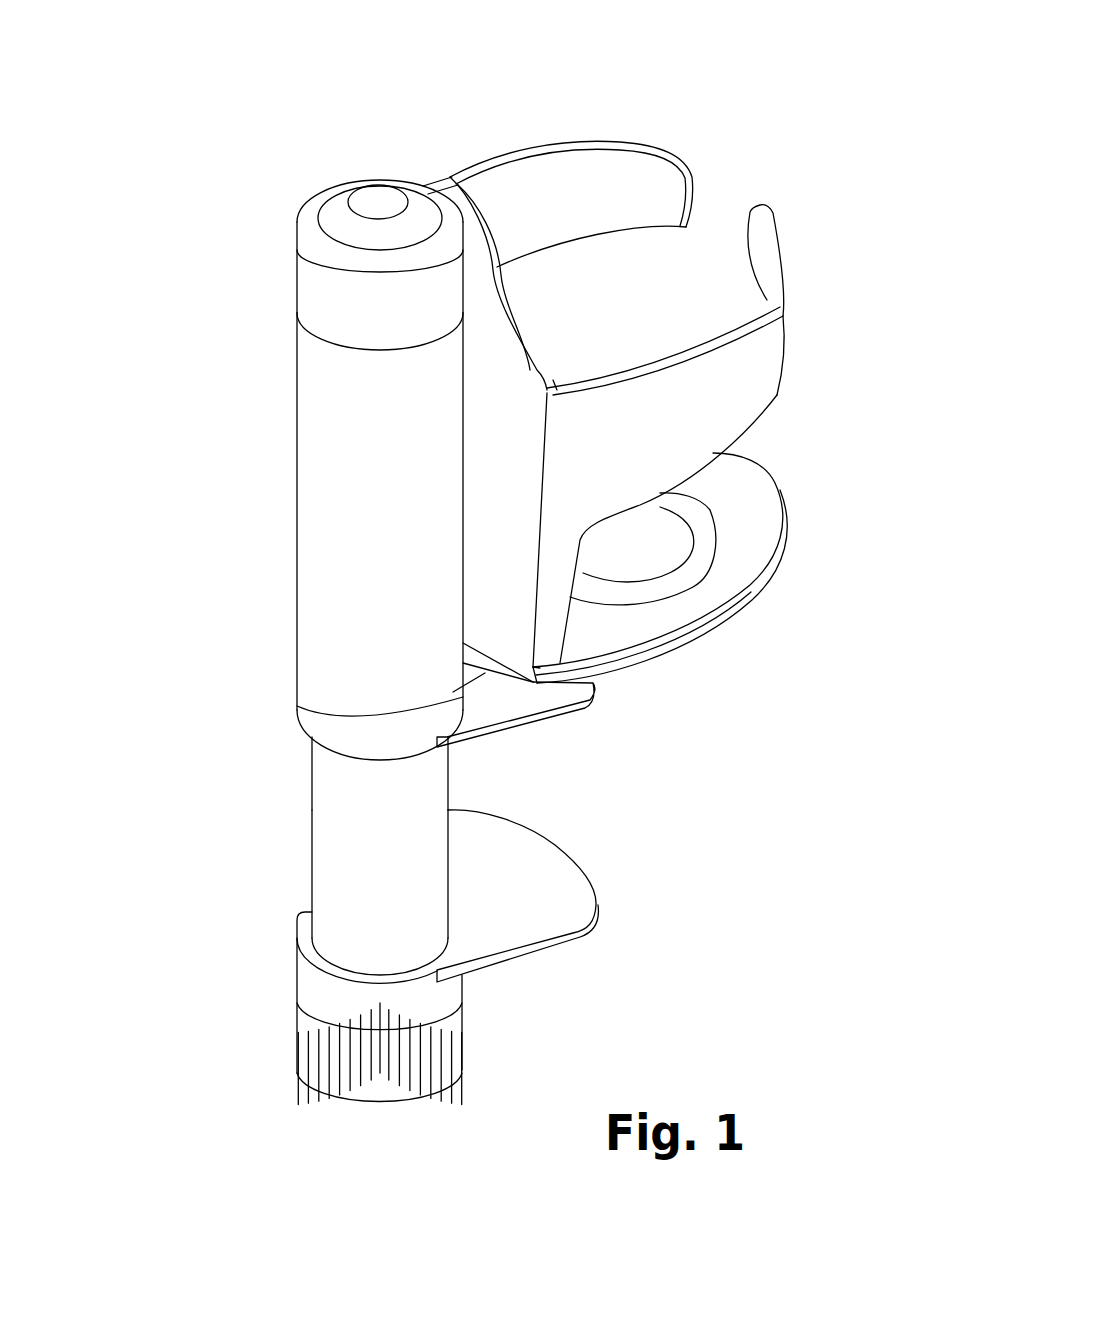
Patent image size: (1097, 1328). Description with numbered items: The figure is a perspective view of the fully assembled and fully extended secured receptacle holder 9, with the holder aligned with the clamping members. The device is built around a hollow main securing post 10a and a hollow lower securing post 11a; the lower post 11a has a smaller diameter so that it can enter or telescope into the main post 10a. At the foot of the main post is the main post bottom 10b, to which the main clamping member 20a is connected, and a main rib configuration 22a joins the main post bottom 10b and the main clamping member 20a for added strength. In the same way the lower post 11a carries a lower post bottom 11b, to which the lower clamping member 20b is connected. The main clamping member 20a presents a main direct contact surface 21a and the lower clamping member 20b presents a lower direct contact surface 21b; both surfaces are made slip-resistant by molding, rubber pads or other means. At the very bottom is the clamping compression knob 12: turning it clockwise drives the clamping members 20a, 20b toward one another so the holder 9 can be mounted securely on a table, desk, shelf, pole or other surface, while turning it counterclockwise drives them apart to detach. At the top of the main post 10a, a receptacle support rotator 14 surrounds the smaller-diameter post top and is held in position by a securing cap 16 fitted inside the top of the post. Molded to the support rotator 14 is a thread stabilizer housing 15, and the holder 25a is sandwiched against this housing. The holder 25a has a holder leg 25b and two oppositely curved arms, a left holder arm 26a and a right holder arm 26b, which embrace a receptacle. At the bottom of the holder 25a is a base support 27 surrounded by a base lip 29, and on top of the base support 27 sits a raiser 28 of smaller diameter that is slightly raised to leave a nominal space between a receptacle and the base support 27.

The secured receptacle holder 9 is at (138, 311).
The main securing post 10a is at (297, 563).
The main post bottom 10b is at (313, 733).
The lower securing post 11a is at (305, 850).
The lower post bottom 11b is at (297, 948).
The clamping compression knob 12 is at (380, 1107).
The receptacle support rotator 14 is at (297, 275).
The thread stabilizer housing 15 is at (462, 187).
The securing cap 16 is at (355, 184).
The main clamping member 20a is at (556, 723).
The lower clamping member 20b is at (577, 896).
The main direct contact surface 21a is at (540, 723).
The lower direct contact surface 21b is at (530, 878).
The main rib configuration 22a is at (330, 718).
The holder 25a is at (618, 119).
The holder leg 25b is at (517, 330).
The left holder arm 26a is at (777, 392).
The right holder arm 26b is at (568, 237).
The base support 27 is at (717, 592).
The raiser 28 is at (705, 522).
The base lip 29 is at (713, 637).